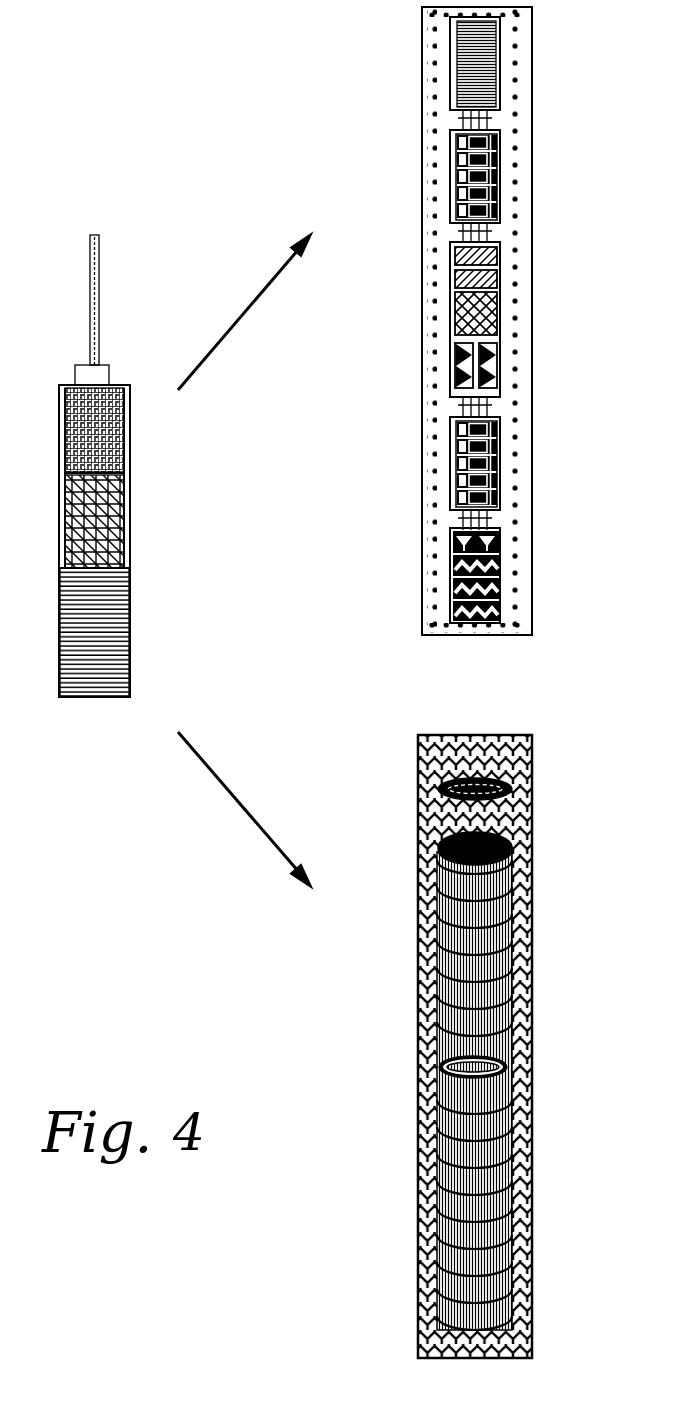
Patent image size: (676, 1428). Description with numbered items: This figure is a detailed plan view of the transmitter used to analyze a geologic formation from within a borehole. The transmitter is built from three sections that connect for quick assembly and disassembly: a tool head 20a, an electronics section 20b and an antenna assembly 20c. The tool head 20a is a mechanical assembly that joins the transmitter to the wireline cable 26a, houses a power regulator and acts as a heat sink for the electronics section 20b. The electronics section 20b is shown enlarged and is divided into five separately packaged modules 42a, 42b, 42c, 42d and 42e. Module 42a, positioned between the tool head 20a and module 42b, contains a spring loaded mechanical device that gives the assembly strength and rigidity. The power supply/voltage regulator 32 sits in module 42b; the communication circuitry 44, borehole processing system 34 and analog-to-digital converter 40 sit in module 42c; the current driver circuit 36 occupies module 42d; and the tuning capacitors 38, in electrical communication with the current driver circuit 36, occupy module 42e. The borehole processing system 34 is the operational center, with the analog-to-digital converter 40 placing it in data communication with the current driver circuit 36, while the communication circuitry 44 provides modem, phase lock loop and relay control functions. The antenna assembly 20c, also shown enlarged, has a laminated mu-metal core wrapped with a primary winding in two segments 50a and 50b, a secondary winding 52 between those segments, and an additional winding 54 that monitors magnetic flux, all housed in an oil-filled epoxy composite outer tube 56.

The wireline cable 26a is at (99, 250).
The tool head 20a is at (109, 371).
The electronics section 20b is at (126, 470).
The antenna assembly 20c is at (130, 605).
The module 42a is at (420, 64).
The module 42b is at (459, 182).
The module 42c is at (459, 319).
The module 42d is at (459, 460).
The module 42e is at (459, 580).
The power supply/voltage regulator 32 is at (497, 173).
The communication circuitry 44 is at (500, 268).
The borehole processing system 34 is at (500, 312).
The analog-to-digital converter 40 is at (500, 370).
The current driver circuit 36 is at (497, 459).
The tuning capacitors 38 is at (500, 574).
The additional winding 54 is at (530, 795).
The outer tube 56 is at (532, 829).
The primary winding segment 50a is at (523, 877).
The secondary winding 52 is at (530, 1075).
The primary winding segment 50b is at (522, 1214).